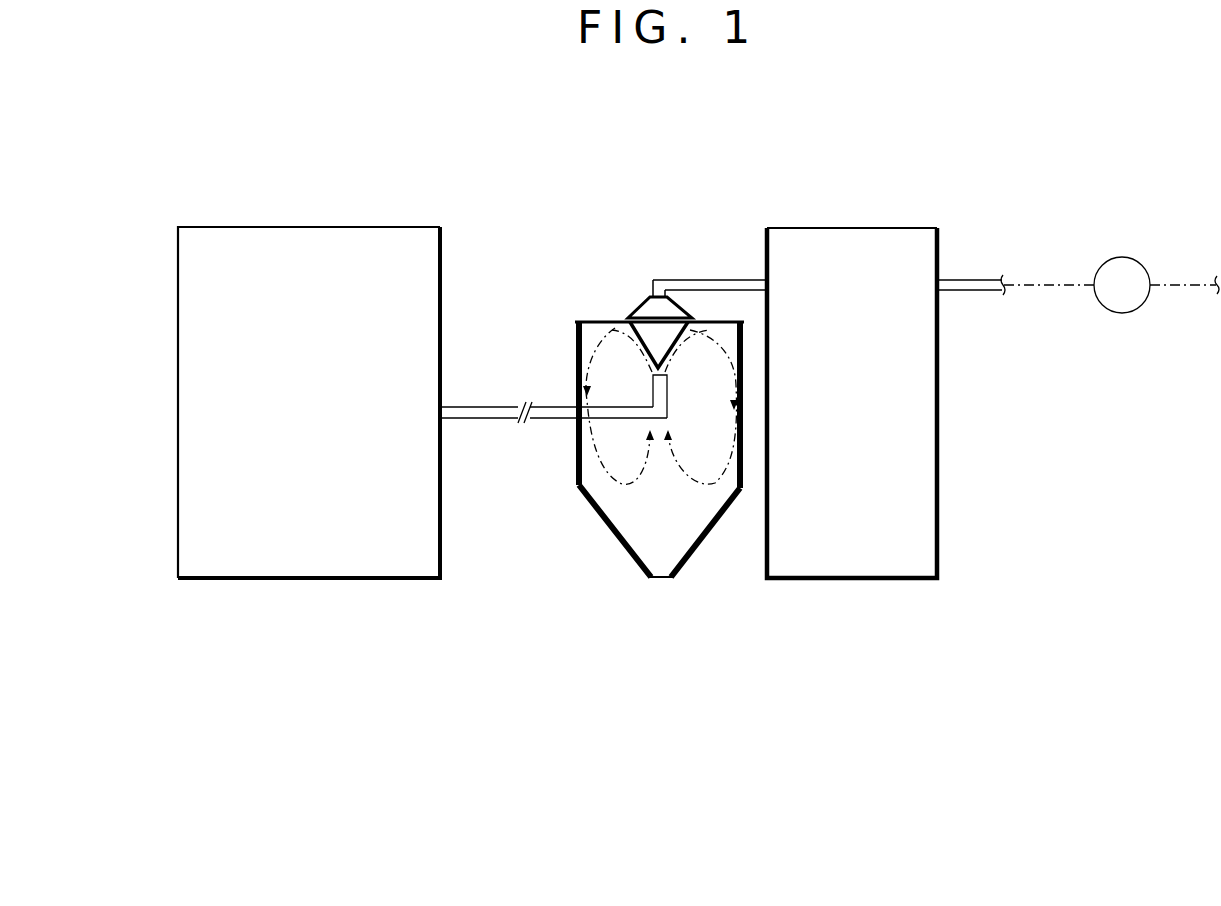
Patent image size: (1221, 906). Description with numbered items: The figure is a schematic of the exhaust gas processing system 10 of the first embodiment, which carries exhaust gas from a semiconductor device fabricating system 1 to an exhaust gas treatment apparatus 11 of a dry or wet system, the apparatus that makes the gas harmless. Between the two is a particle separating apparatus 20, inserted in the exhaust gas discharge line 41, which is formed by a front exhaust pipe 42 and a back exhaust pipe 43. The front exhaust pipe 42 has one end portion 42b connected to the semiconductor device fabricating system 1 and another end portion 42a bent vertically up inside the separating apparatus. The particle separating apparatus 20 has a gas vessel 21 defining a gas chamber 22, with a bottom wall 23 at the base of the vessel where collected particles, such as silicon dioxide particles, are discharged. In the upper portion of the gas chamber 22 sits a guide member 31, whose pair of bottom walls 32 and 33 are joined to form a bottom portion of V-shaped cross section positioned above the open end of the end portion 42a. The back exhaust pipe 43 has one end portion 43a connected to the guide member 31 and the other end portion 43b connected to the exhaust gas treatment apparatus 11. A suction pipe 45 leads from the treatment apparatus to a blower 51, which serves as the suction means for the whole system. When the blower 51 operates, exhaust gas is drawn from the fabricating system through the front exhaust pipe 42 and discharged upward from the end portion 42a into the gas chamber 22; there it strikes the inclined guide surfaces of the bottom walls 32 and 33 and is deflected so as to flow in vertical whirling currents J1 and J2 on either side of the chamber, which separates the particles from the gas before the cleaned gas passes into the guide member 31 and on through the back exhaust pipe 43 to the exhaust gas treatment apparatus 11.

The semiconductor device fabricating system 1 is at (373, 233).
The exhaust gas processing system 10 is at (856, 349).
The exhaust gas treatment apparatus 11 is at (888, 238).
The particle separating apparatus 20 is at (643, 408).
The gas vessel 21 is at (600, 515).
The gas chamber 22 is at (606, 379).
The bottom wall 23 is at (660, 578).
The guide member 31 is at (643, 298).
The bottom wall 32 is at (692, 326).
The bottom wall 33 is at (617, 322).
The exhaust gas discharge line 41 is at (475, 394).
The front exhaust pipe 42 is at (540, 405).
The end portion of front exhaust pipe 42a is at (656, 371).
The end portion of front exhaust pipe 42b is at (445, 418).
The back exhaust pipe 43 is at (717, 280).
The end portion of back exhaust pipe 43a is at (657, 283).
The end portion of back exhaust pipe 43b is at (763, 282).
The suction pipe 45 is at (976, 278).
The blower 51 is at (1128, 263).
The whirling current J1 is at (712, 482).
The whirling current J2 is at (586, 492).